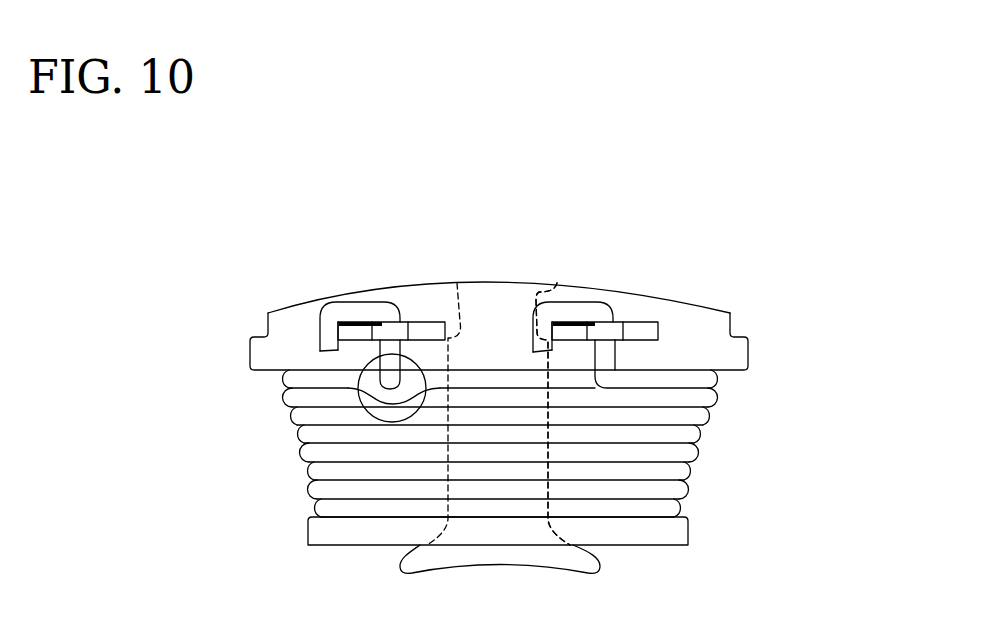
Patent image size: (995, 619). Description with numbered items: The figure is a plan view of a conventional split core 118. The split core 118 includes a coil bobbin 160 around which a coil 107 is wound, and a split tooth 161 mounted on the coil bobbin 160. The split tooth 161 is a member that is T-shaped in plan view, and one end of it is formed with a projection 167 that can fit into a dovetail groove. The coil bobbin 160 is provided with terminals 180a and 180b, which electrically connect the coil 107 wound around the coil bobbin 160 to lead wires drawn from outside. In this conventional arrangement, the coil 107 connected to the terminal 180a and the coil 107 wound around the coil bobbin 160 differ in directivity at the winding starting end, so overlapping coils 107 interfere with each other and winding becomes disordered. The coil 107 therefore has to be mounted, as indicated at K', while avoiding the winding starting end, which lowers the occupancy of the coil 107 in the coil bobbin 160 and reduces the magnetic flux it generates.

The split core 118 is at (775, 292).
The coil bobbin 160 is at (737, 353).
The terminal 180a is at (427, 332).
The terminal 180b is at (640, 330).
The coil 107 is at (690, 433).
The projection 167 is at (557, 283).
The split tooth 161 is at (591, 350).
The coil mounting region K' is at (302, 414).